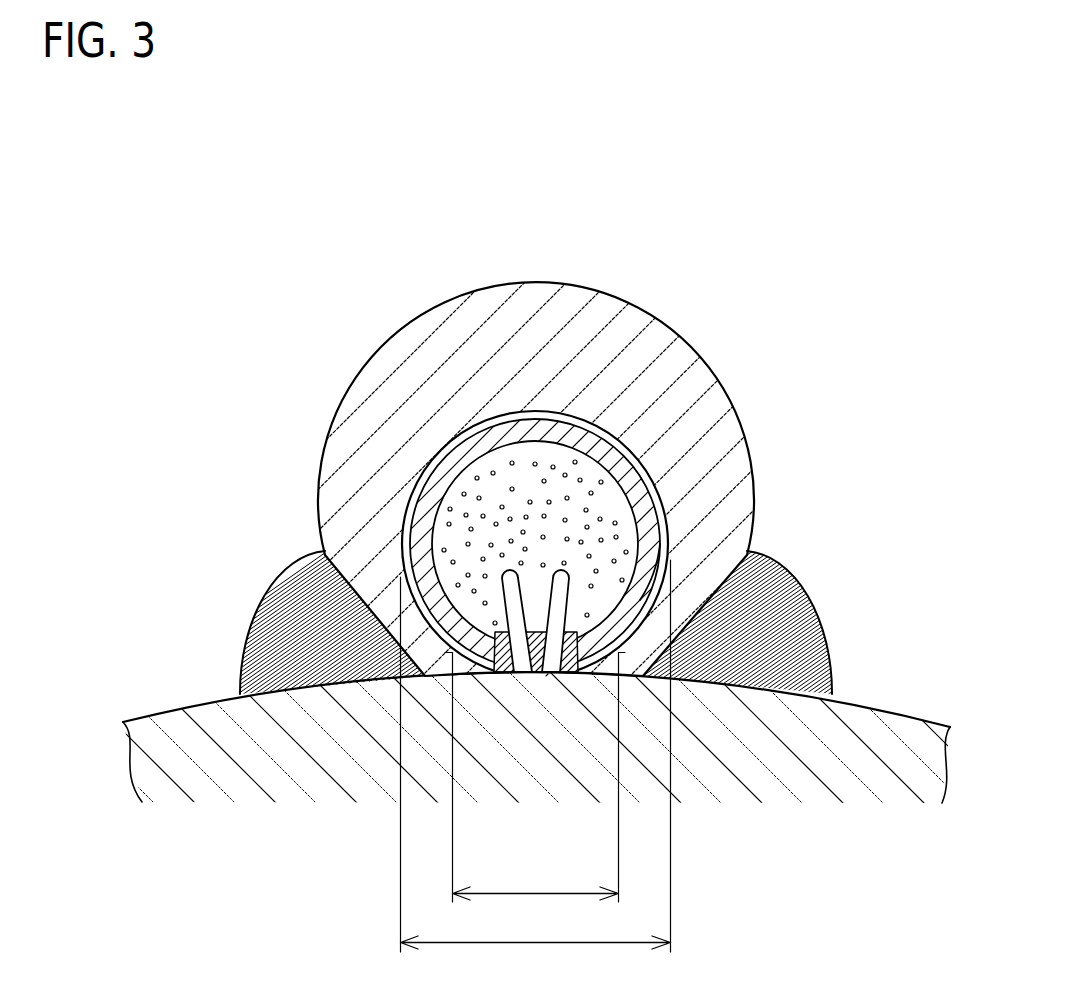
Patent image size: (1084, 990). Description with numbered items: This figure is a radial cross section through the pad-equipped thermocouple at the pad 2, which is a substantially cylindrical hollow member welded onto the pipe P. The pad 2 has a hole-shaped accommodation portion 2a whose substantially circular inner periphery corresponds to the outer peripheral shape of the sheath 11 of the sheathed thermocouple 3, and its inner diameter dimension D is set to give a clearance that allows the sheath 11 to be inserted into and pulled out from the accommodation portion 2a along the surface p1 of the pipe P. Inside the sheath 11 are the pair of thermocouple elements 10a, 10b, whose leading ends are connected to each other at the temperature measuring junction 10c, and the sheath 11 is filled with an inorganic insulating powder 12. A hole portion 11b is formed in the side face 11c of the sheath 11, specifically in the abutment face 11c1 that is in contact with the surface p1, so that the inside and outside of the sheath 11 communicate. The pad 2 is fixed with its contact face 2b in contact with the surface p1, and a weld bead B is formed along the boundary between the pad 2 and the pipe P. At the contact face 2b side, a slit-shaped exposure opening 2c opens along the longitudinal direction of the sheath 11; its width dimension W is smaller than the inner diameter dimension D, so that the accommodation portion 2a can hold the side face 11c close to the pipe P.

The pad 2 is at (583, 268).
The accommodation portion 2a is at (583, 432).
The contact face 2b is at (628, 680).
The exposure opening 2c is at (470, 680).
The sheathed thermocouple 3 is at (678, 535).
The thermocouple element 10a is at (508, 576).
The thermocouple element 10b is at (568, 572).
The temperature measuring junction 10c is at (562, 678).
The sheath 11 is at (471, 440).
The hole portion 11b is at (503, 678).
The side face 11c is at (666, 546).
The abutment face 11c1 is at (538, 678).
The inorganic insulating powder 12 is at (470, 500).
The weld bead B is at (255, 625).
The pipe P is at (217, 790).
The surface of the pipe p1 is at (155, 713).
The width dimension W is at (536, 789).
The inner diameter dimension D is at (536, 756).